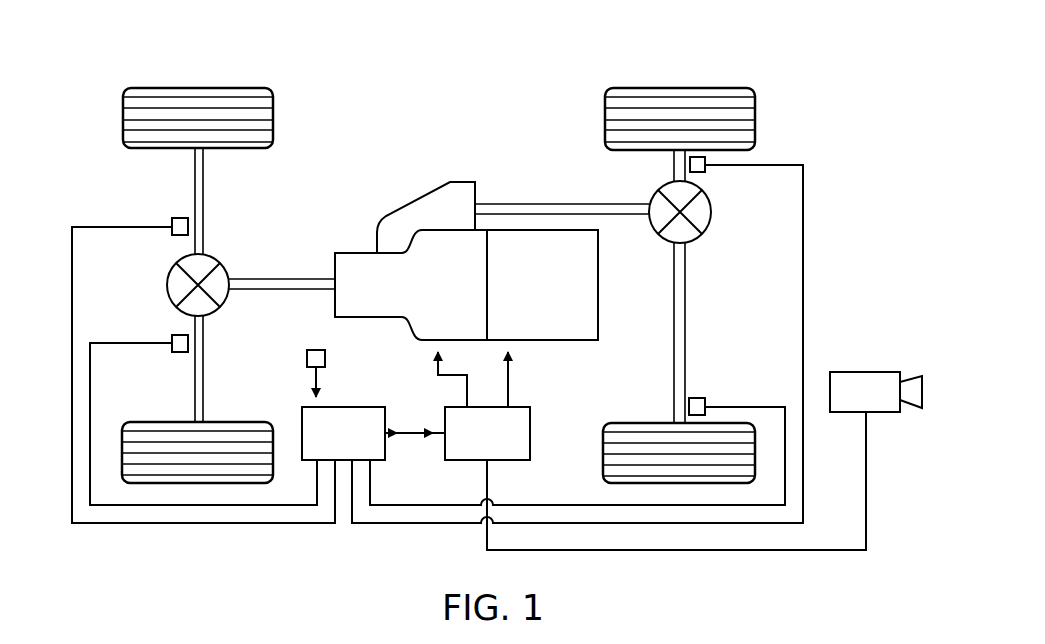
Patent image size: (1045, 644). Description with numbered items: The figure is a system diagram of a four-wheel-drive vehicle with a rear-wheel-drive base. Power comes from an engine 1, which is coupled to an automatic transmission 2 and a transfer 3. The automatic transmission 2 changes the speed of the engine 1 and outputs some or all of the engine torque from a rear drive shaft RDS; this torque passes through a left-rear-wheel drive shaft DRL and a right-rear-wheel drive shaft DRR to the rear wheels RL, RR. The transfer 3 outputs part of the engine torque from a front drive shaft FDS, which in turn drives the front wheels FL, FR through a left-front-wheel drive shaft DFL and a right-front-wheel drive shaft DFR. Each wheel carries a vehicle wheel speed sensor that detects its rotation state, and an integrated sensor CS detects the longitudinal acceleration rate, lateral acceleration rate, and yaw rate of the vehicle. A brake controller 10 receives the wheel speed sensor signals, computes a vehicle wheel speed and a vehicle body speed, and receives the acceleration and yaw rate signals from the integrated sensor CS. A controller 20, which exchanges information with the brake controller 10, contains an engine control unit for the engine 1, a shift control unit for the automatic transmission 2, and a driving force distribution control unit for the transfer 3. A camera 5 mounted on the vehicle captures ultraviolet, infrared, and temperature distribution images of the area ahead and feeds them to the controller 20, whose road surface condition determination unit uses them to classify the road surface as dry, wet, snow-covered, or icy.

The engine 1 is at (598, 285).
The automatic transmission 2 is at (360, 262).
The transfer 3 is at (423, 198).
The camera 5 is at (870, 372).
The brake controller 10 is at (356, 407).
The controller 20 is at (465, 462).
The rear wheel (left) RL is at (168, 87).
The rear wheel (right) RR is at (218, 422).
The front wheel (left) FL is at (678, 87).
The front wheel (right) FR is at (638, 422).
The left-rear-wheel drive shaft DRL is at (203, 198).
The right-rear-wheel drive shaft DRR is at (203, 390).
The left-front-wheel drive shaft DFL is at (673, 163).
The right-front-wheel drive shaft DFR is at (685, 328).
The rear drive shaft RDS is at (265, 278).
The front drive shaft FDS is at (540, 203).
The integrated sensor CS is at (315, 350).